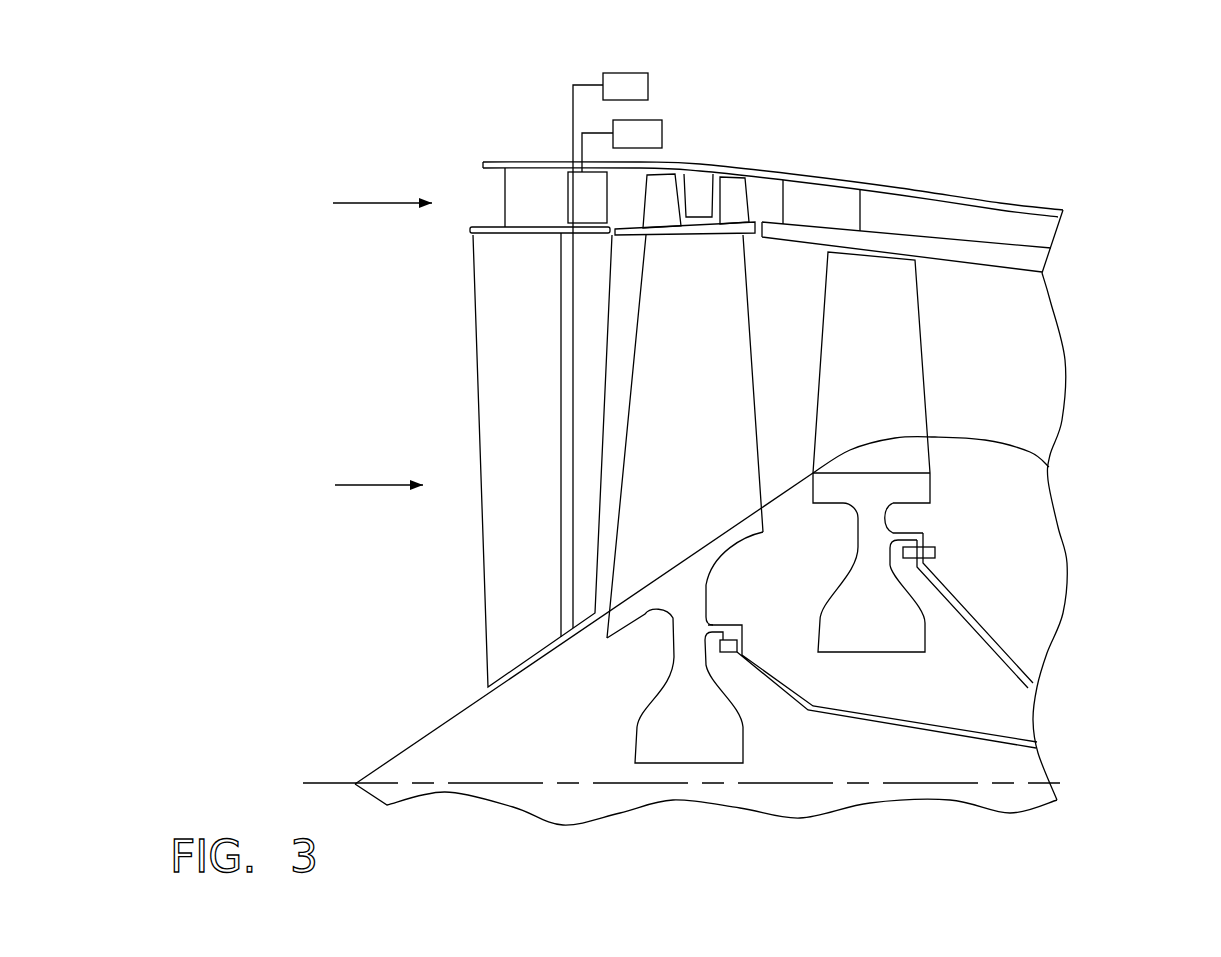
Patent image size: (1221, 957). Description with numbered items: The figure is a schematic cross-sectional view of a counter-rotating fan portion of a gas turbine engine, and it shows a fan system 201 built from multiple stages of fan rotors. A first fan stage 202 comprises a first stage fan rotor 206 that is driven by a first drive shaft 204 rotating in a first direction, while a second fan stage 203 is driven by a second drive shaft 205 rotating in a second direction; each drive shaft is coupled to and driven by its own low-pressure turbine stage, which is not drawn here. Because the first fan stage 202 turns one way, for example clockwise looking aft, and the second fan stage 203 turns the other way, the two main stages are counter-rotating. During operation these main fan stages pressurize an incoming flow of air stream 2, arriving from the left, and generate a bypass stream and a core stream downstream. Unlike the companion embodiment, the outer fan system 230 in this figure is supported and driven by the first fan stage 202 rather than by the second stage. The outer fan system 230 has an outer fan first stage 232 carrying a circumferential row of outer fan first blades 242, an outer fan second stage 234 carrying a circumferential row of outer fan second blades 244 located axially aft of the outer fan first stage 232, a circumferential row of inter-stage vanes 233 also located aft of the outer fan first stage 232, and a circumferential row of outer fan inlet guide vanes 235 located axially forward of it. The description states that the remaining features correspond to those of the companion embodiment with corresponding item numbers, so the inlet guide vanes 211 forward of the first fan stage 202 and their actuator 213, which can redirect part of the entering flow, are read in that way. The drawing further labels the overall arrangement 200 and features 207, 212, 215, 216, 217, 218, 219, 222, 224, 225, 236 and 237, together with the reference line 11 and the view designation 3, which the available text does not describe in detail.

The turbine section 200 is at (1080, 125).
The fan system 201 is at (800, 592).
The first fan stage 202 is at (597, 698).
The second fan stage 203 is at (937, 513).
The first drive shaft 204 is at (913, 718).
The second drive shaft 205 is at (967, 602).
The first stage fan rotor 206 is at (736, 543).
The casing 207 is at (1013, 205).
The inlet guide vanes 211 is at (500, 390).
The vane struts 212 is at (590, 287).
The actuator 213 is at (627, 84).
The outer band 215 is at (538, 231).
The airfoil 216 is at (618, 352).
The seal carrier 217 is at (627, 205).
The airfoil surface 218 is at (712, 385).
The inner flowpath 219 is at (724, 536).
The second airfoil 222 is at (905, 355).
The gap 224 is at (752, 226).
The shroud 225 is at (1020, 258).
The outer fan system 230 is at (835, 128).
The outer fan first stage 232 is at (698, 183).
The inter-stage vanes 233 is at (702, 178).
The outer fan second stage 234 is at (733, 191).
The outer fan inlet guide vanes 235 is at (592, 185).
The control unit 236 is at (637, 132).
The shroud hanger 237 is at (833, 203).
The outer fan first blades 242 is at (663, 182).
The outer fan second blades 244 is at (742, 200).
The centerline axis 11 is at (327, 783).
The incoming flow of air stream 2 is at (368, 487).
The section line 3 is at (372, 203).